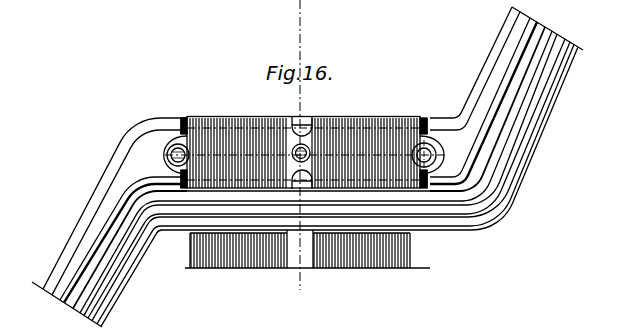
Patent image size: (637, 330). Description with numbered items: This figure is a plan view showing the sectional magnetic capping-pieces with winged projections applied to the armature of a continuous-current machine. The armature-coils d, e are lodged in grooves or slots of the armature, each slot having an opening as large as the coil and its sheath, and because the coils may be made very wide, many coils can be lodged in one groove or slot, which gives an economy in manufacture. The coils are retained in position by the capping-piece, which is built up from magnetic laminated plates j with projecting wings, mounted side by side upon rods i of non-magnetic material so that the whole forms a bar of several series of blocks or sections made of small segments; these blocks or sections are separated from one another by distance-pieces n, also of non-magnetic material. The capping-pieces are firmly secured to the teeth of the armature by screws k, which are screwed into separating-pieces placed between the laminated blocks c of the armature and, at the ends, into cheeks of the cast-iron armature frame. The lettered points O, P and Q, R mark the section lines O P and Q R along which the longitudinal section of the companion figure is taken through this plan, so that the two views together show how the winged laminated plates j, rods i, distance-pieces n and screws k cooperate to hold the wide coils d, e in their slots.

The armature-coil d is at (522, 50).
The magnetic laminated plate j is at (228, 114).
The rod i is at (193, 117).
The distance-piece n is at (105, 168).
The section line O P O is at (168, 155).
The screw k is at (170, 153).
The section line O P is at (294, 152).
The section line Q R is at (427, 175).
The section line Q R Q is at (307, 233).
The laminated block c is at (300, 233).
The armature-coil e is at (245, 258).